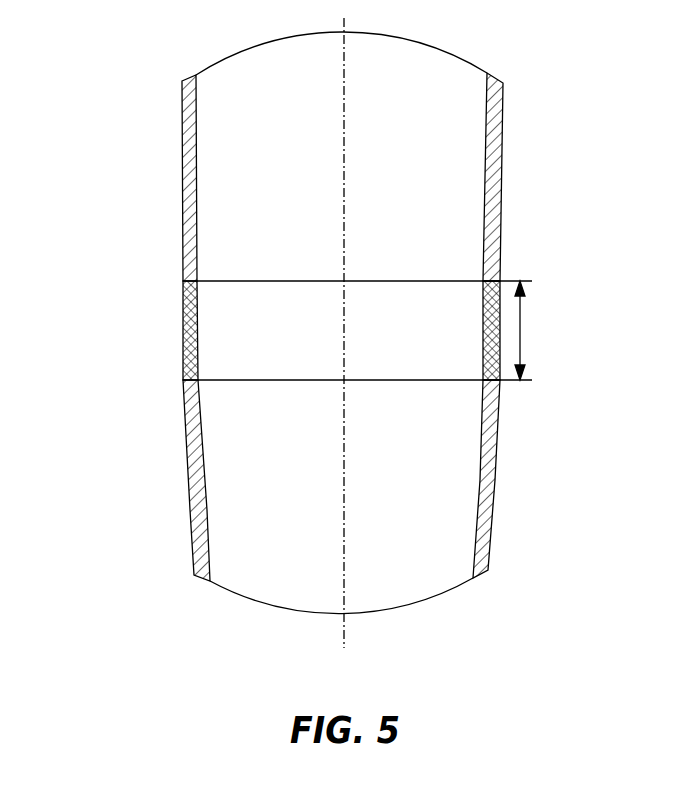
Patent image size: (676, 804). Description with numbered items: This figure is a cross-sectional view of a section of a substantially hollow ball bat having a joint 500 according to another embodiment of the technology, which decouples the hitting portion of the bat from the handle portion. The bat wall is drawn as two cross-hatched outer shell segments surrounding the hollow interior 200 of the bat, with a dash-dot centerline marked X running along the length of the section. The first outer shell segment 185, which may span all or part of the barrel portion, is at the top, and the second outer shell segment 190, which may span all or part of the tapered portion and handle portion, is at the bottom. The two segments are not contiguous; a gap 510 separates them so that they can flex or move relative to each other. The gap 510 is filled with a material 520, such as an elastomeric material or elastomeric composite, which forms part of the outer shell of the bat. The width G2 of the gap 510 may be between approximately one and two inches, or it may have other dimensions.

The joint 500 is at (285, 333).
The hollow interior 200 is at (331, 333).
The first outer shell segment 185 is at (181, 121).
The second outer shell segment 190 is at (188, 466).
The gap 510 is at (319, 330).
The material 520 is at (175, 380).
The width of the gap G2 is at (535, 330).
The central axis X is at (344, 635).